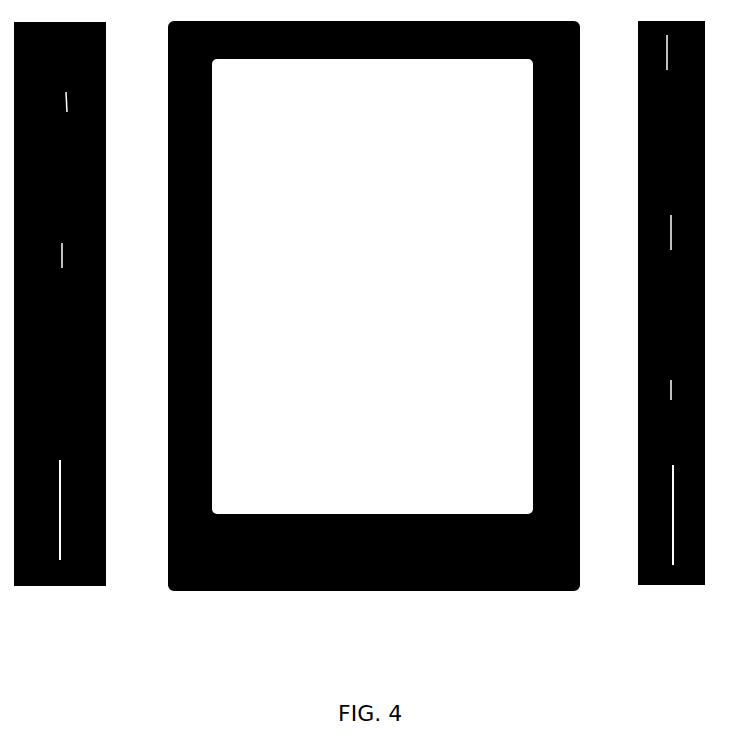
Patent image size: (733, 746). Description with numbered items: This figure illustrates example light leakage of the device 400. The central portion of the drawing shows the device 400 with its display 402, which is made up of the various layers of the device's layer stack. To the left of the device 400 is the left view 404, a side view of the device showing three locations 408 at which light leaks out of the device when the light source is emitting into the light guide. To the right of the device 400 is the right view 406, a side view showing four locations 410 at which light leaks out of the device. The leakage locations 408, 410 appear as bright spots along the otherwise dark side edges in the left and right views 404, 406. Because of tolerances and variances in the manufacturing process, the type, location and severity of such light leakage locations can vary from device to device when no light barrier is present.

The device 400 is at (341, 592).
The display 402 is at (400, 450).
The left view 404 is at (90, 587).
The right view 406 is at (668, 586).
The locations 408 is at (107, 102).
The locations 410 is at (636, 54).